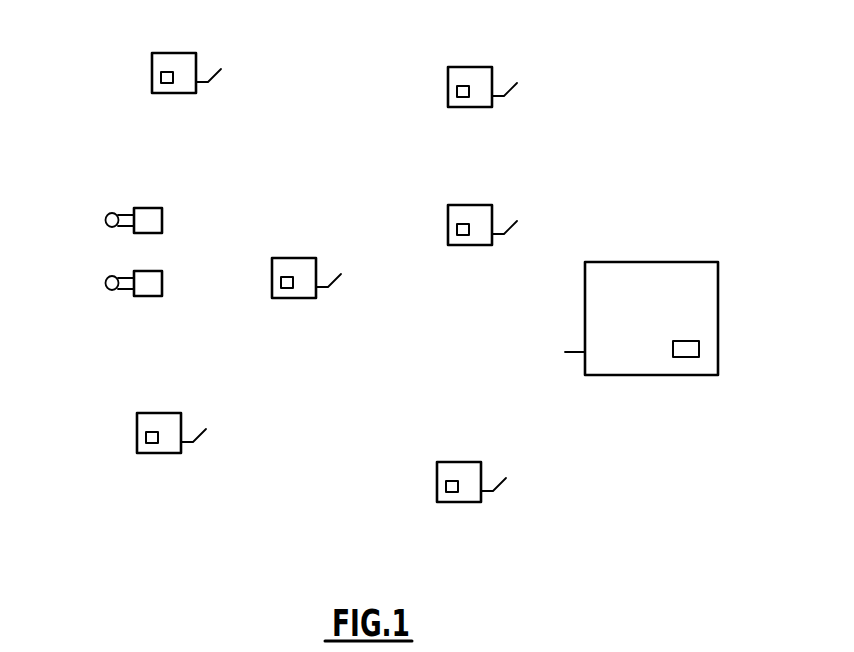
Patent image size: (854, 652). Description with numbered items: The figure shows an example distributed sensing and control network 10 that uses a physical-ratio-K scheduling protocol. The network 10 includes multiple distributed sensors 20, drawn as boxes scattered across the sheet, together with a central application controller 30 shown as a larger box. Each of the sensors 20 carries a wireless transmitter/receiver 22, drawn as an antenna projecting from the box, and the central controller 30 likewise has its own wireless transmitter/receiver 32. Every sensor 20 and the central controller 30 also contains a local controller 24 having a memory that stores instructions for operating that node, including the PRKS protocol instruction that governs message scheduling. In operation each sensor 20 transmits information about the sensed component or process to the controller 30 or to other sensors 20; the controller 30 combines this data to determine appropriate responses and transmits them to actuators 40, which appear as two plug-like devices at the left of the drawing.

The distributed sensing and control network 10 is at (645, 123).
The distributed sensor 20 is at (181, 66).
The wireless transmitter/receiver 22 is at (215, 76).
The local controller 24 is at (167, 84).
The central controller 30 is at (634, 318).
The wireless transmitter/receiver 32 is at (580, 352).
The actuator 40 is at (152, 221).